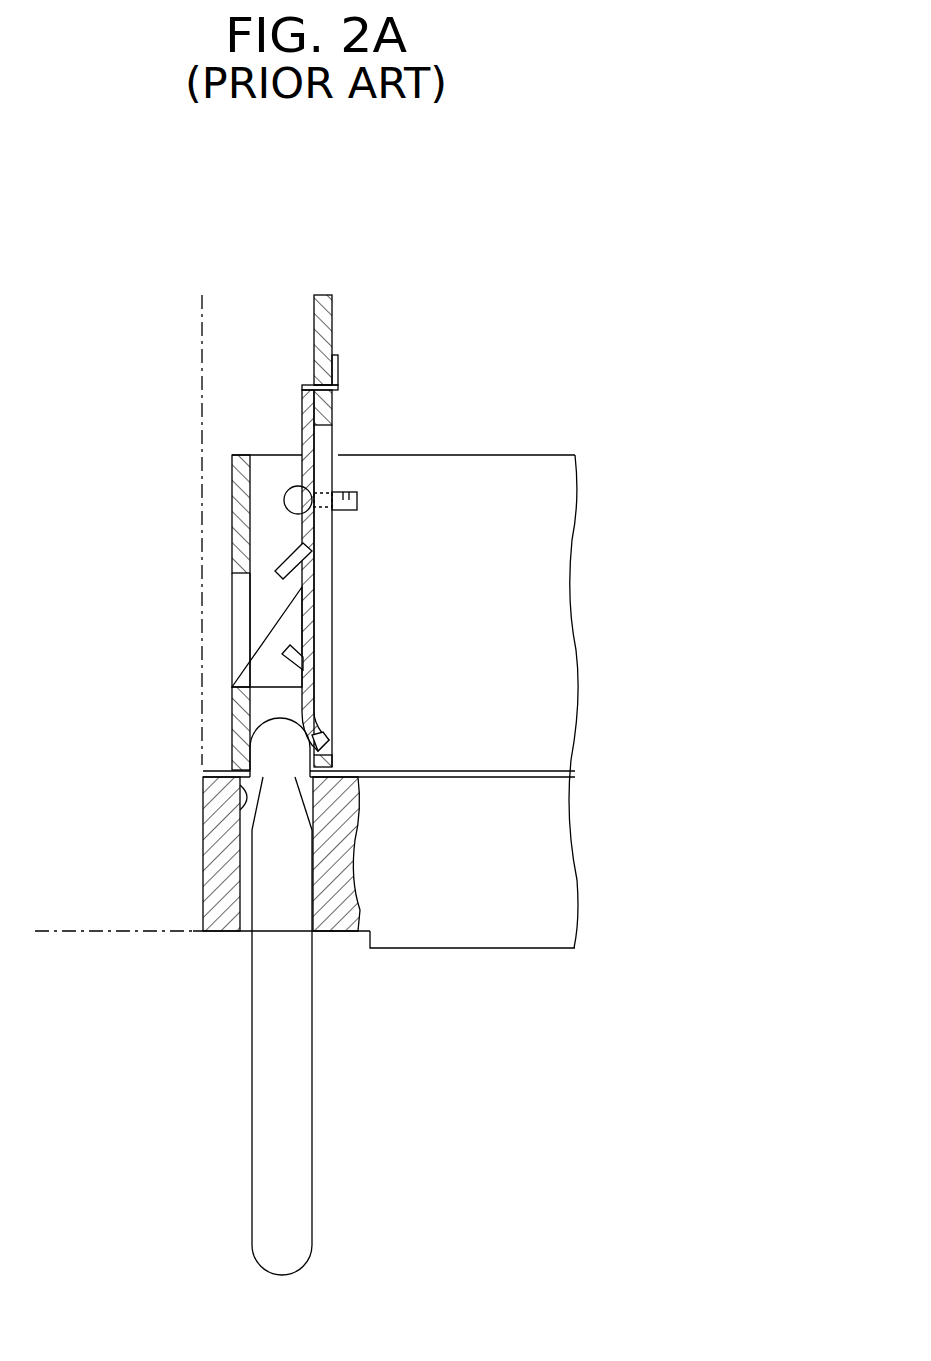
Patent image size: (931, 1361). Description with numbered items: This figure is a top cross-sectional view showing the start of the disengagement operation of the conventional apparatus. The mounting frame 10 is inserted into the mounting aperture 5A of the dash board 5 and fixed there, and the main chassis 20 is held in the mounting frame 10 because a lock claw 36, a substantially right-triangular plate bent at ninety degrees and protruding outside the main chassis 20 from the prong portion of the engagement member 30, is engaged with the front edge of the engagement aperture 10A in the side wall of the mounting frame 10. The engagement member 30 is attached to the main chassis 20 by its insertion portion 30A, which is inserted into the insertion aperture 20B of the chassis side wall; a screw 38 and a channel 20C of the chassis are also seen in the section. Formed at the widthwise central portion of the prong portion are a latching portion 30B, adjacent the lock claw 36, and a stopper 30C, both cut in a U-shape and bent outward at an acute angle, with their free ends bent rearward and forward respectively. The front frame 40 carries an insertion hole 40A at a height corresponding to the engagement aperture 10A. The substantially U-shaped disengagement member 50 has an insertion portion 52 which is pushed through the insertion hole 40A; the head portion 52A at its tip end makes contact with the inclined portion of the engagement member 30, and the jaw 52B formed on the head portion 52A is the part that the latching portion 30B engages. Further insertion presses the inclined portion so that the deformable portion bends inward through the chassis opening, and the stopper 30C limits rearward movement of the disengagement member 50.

The dash board 5 is at (85, 931).
The mounting aperture 5A is at (204, 845).
The mounting frame 10 is at (226, 512).
The engagement aperture 10A is at (243, 616).
The main chassis 20 is at (346, 315).
The insertion aperture 20B is at (336, 392).
The shield plate channel 20C is at (325, 512).
The engagement member 30 is at (292, 422).
The insertion portion 30A is at (339, 360).
The latching portion 30B is at (306, 463).
The stopper 30C is at (286, 549).
The lock claw 36 is at (333, 614).
The screw 38 is at (358, 500).
The front frame 40 is at (510, 970).
The insertion hole 40A is at (240, 792).
The disengagement member 50 is at (294, 996).
The insertion portion 52 is at (278, 1138).
The head portion 52A is at (268, 752).
The jaw 52B is at (278, 778).